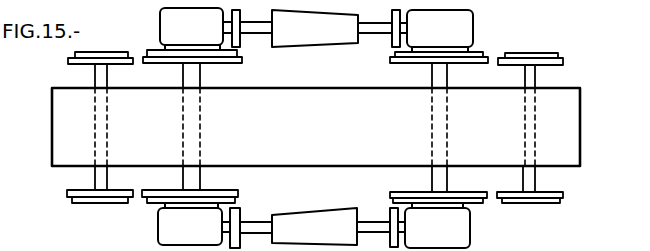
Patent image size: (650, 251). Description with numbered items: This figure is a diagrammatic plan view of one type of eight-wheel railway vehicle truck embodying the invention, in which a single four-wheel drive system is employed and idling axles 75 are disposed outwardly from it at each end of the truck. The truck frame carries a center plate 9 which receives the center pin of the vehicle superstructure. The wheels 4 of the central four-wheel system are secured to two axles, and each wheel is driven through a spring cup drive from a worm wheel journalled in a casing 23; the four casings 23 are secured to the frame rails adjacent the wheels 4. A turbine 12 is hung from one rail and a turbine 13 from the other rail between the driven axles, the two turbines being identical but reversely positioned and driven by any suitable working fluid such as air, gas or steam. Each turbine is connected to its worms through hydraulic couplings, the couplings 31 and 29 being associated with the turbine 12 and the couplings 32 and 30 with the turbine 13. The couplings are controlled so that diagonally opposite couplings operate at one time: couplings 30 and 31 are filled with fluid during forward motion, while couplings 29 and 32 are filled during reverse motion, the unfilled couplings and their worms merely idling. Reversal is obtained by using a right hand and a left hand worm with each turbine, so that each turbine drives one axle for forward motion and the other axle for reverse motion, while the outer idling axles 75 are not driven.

The center plate 9 is at (357, 133).
The wheels 4 is at (224, 64).
The idling axles 75 is at (536, 77).
The casing 23 is at (315, 128).
The turbine 12 is at (315, 28).
The turbine 13 is at (313, 226).
The hydraulic coupling 29 is at (392, 17).
The hydraulic coupling 30 is at (390, 215).
The hydraulic coupling 31 is at (241, 18).
The hydraulic coupling 32 is at (241, 218).